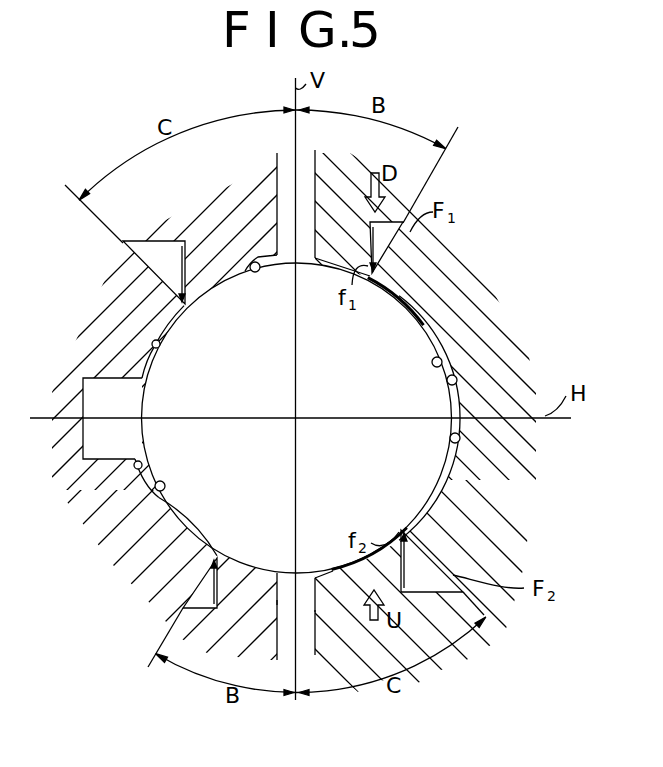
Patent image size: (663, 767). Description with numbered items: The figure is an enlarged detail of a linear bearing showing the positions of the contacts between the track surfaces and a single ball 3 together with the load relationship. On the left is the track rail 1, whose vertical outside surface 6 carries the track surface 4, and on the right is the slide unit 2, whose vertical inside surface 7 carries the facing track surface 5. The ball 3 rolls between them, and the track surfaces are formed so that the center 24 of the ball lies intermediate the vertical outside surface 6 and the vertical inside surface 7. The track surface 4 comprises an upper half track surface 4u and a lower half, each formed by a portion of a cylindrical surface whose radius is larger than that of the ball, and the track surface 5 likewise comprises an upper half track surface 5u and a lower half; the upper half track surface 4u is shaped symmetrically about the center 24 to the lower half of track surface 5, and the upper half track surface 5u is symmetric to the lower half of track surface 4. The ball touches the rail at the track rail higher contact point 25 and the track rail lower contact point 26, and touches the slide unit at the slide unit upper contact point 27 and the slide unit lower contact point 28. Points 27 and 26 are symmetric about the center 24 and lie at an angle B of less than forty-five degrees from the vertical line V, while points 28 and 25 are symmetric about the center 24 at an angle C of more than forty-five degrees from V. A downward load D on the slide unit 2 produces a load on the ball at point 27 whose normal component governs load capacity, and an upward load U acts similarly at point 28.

The track rail 1 is at (62, 364).
The slide unit 2 is at (516, 326).
The ball 3 is at (400, 318).
The track surface 4 is at (137, 463).
The upper half track surface 4u is at (248, 268).
The track surface 5 is at (458, 383).
The upper half track surface 5u is at (443, 367).
The vertical outside surface 6 is at (275, 638).
The vertical inside surface 7 is at (316, 627).
The center 24 is at (294, 415).
The track rail higher contact point 25 is at (180, 303).
The track rail lower contact point 26 is at (212, 562).
The slide unit upper contact point 27 is at (402, 250).
The slide unit lower contact point 28 is at (411, 527).